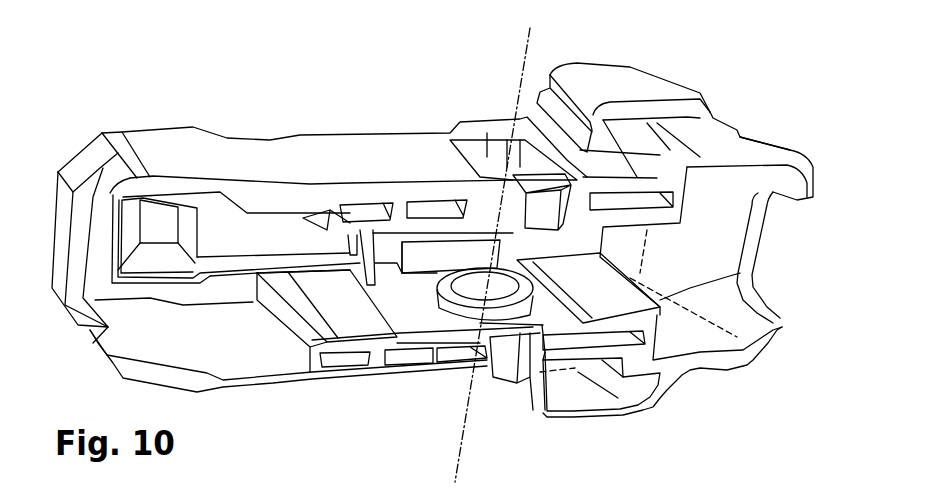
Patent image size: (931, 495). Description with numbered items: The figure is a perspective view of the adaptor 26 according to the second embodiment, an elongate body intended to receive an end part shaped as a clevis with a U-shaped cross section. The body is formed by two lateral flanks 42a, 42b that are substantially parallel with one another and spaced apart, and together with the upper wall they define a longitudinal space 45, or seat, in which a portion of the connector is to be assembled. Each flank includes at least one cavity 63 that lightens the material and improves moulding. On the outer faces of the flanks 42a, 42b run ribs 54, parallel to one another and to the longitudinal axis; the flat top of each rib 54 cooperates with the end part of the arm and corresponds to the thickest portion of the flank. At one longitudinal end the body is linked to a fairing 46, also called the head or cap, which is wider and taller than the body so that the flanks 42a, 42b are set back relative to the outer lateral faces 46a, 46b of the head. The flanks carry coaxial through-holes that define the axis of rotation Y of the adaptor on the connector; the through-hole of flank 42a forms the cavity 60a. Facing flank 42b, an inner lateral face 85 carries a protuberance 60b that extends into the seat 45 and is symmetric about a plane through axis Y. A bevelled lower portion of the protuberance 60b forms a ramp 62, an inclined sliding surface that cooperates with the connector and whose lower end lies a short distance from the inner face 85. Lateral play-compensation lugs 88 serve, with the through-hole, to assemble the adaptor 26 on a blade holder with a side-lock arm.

The adaptor 26 is at (697, 40).
The lateral flank 42a is at (417, 143).
The lateral flank 42b is at (273, 387).
The longitudinal space 45 is at (693, 288).
The fairing 46 is at (767, 250).
The outer lateral face of the head 46a is at (748, 140).
The outer lateral face of the head 46b is at (730, 363).
The rib 54 is at (312, 147).
The cavity 60a is at (487, 157).
The protuberance 60b is at (457, 300).
The ramp 62 is at (510, 313).
The cavity 63 is at (363, 213).
The inner lateral face 85 is at (418, 353).
The lateral play-compensation lug 88 is at (627, 97).
The axis of rotation Y is at (527, 50).